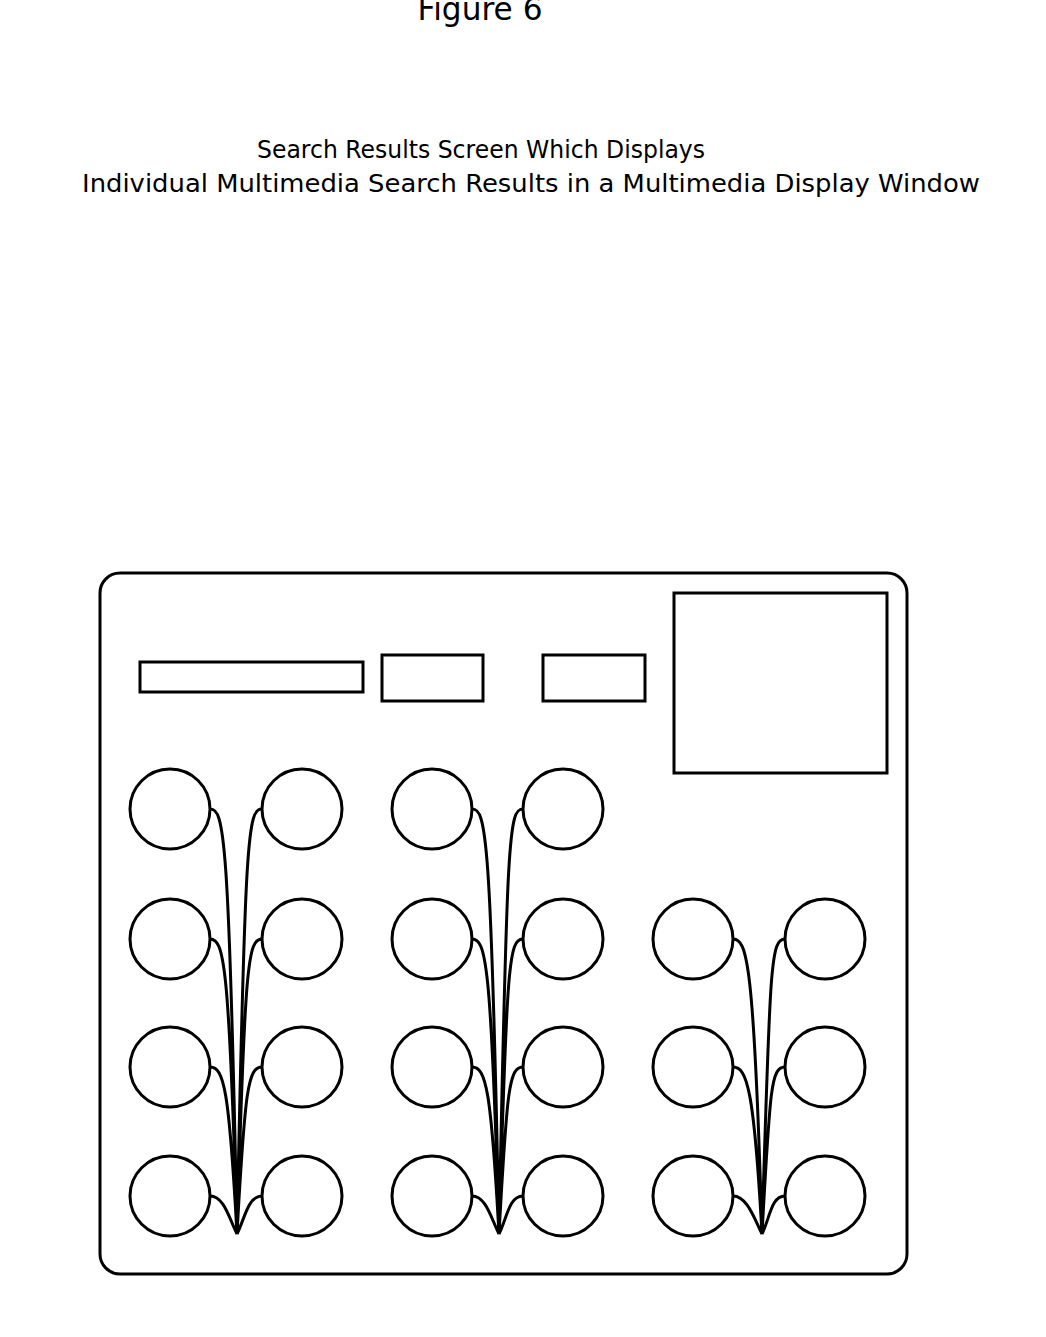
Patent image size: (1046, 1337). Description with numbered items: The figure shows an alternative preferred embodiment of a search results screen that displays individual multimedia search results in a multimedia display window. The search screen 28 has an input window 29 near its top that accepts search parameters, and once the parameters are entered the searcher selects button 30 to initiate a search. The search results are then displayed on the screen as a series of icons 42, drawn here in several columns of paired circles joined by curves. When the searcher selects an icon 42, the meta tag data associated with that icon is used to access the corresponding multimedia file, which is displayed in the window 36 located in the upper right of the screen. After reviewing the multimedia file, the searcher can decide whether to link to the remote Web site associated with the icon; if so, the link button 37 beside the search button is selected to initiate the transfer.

The search screen 28 is at (210, 478).
The input window 29 is at (208, 658).
The button 30 is at (452, 653).
The link button 37 is at (612, 653).
The window 36 is at (735, 773).
The icons 42 is at (497, 1018).